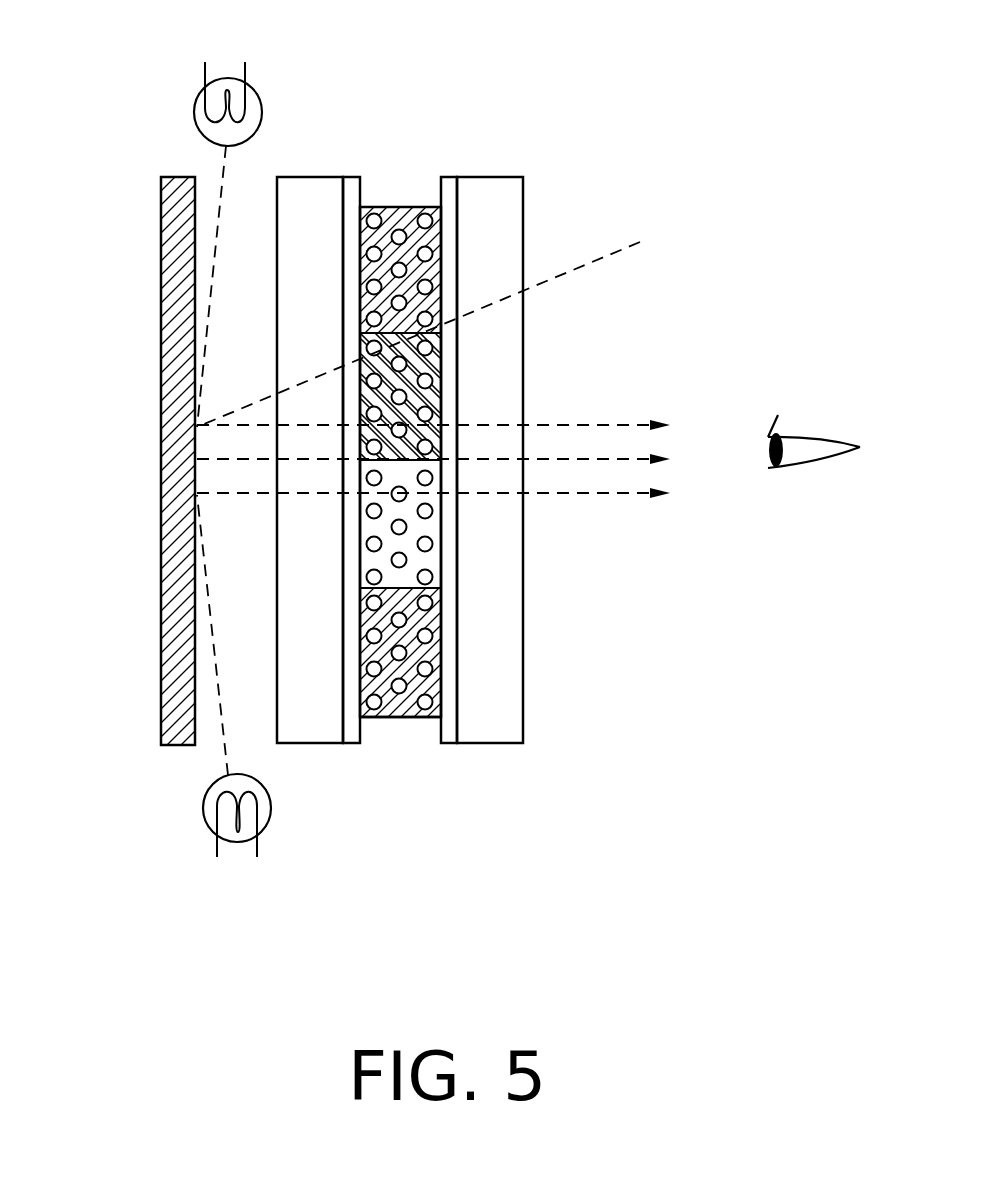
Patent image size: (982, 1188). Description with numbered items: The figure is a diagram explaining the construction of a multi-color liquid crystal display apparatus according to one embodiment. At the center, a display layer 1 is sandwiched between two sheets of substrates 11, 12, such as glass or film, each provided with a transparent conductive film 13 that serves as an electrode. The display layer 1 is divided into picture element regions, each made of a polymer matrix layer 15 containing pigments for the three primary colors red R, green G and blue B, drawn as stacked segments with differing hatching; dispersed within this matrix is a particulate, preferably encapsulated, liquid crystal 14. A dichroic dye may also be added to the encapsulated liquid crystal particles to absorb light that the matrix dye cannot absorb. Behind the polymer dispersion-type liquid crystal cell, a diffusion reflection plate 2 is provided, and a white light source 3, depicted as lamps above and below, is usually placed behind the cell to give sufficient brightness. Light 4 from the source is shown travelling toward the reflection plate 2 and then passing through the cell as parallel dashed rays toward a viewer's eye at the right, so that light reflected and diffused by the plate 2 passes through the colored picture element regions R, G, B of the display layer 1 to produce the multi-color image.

The display layer 1 is at (422, 722).
The diffusion reflection plate 2 is at (173, 745).
The white light source 3 is at (204, 80).
The light ray 4 is at (435, 323).
The transparent substrate 11 is at (485, 190).
The transparent substrate 12 is at (312, 195).
The transparent conductive film 13 is at (450, 190).
The liquid crystal 14 is at (375, 720).
The polymer matrix layer 15 is at (398, 722).
The blue B is at (433, 247).
The green G is at (435, 386).
The red R is at (435, 540).